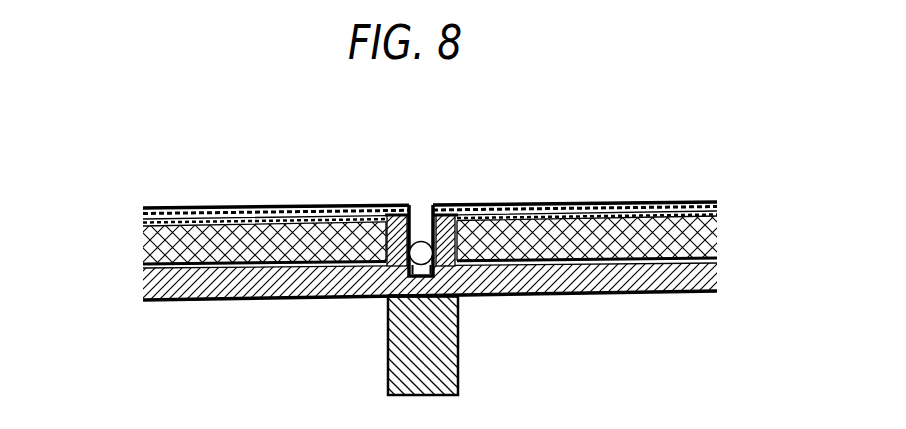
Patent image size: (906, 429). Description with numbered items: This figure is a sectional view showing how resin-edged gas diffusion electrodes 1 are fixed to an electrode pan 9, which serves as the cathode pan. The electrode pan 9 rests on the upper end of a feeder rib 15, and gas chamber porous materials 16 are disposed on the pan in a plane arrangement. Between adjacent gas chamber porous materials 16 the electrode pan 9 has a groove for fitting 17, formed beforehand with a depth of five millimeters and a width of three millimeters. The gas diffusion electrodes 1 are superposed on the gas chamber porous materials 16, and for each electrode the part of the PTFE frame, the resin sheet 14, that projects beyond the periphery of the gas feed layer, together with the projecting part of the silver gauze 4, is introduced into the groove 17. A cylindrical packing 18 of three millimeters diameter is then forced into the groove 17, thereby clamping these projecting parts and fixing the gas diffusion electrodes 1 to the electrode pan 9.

The resin-edged gas diffusion electrode 1 is at (613, 203).
The silver gauze 4 is at (447, 232).
The electrode pan 9 is at (675, 277).
The resin sheet 14 is at (376, 203).
The feeder rib 15 is at (458, 377).
The gas chamber porous material 16 is at (143, 250).
The groove for fitting 17 is at (418, 212).
The cylindrical packing 18 is at (387, 267).